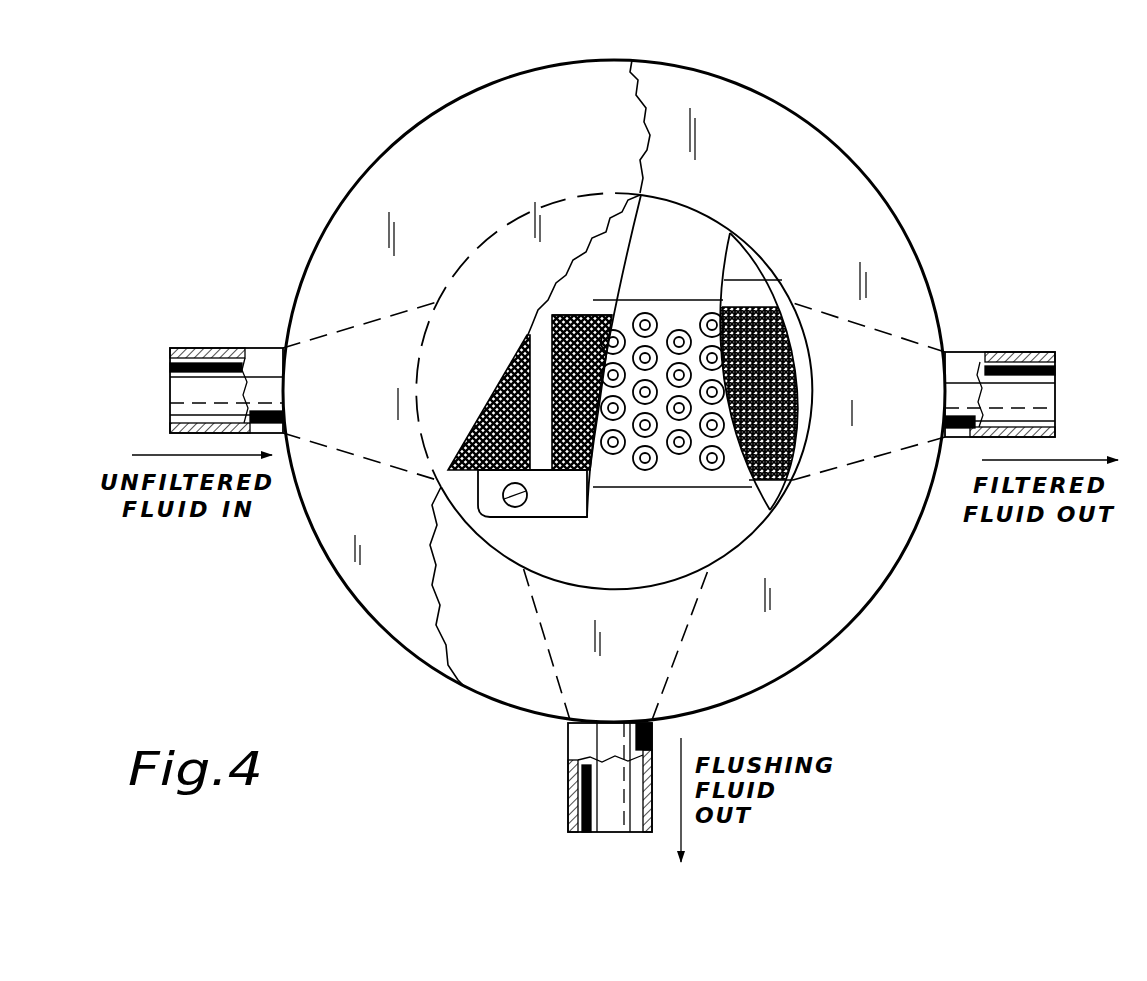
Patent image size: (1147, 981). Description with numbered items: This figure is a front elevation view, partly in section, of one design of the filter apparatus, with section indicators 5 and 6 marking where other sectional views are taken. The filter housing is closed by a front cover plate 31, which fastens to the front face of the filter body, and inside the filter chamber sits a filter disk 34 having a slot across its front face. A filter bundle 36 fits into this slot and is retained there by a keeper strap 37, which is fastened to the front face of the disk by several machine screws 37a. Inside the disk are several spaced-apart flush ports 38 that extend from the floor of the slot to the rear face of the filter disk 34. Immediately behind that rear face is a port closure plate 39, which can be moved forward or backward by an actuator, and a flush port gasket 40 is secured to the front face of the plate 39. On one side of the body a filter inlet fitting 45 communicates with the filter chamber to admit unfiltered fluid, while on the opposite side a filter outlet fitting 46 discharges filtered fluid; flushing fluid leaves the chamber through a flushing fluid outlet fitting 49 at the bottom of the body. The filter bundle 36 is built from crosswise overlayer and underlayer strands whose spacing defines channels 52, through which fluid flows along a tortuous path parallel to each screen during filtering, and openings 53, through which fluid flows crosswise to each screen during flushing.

The front cover plate 31 is at (357, 236).
The filter disk 34 is at (692, 545).
The filter bundle 36 is at (603, 313).
The keeper strap 37 is at (557, 502).
The machine screws 37a is at (512, 507).
The flush ports 38 is at (712, 462).
The port closure plate 39 is at (737, 290).
The flush port gasket 40 is at (770, 307).
The filter inlet fitting 45 is at (213, 348).
The filter outlet fitting 46 is at (1010, 352).
The flushing fluid outlet fitting 49 is at (568, 795).
The channels 52 is at (332, 578).
The openings 53 is at (567, 315).
The section line 5- 5 is at (577, 36).
The section line 6- 6 is at (139, 428).